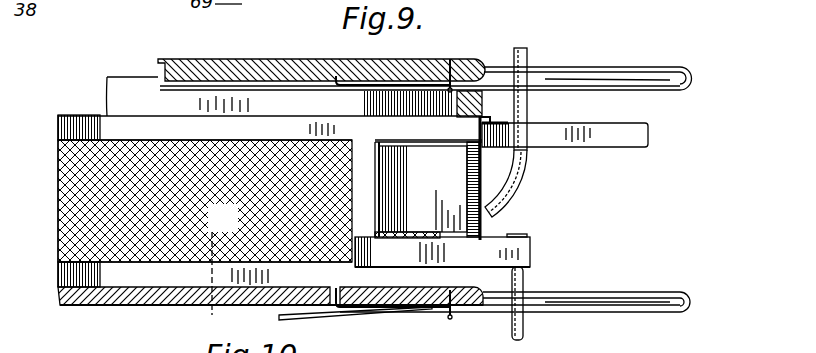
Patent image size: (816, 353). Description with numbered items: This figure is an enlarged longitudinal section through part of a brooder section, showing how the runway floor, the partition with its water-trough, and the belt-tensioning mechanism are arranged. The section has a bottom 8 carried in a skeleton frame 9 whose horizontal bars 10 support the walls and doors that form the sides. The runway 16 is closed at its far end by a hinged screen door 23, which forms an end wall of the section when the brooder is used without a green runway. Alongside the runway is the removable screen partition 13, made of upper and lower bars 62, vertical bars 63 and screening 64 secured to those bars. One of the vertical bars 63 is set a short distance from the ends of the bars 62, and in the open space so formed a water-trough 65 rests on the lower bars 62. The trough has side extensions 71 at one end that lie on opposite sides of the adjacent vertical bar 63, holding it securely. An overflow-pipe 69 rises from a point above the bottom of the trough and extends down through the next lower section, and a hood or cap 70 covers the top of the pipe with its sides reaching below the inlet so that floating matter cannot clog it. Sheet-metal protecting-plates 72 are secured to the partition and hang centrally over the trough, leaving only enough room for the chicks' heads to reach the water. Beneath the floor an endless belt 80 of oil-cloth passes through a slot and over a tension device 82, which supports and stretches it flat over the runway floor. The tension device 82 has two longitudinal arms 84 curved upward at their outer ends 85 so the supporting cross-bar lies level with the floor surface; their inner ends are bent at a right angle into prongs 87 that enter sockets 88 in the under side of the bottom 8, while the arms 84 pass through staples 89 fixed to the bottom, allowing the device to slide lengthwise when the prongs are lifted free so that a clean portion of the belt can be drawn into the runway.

The bottom 8 is at (428, 62).
The skeleton frame 9 is at (482, 104).
The horizontal bars 10 is at (407, 103).
The removable screen partition 13 is at (56, 210).
The runway 16 is at (102, 285).
The hinged screen door 23 is at (585, 137).
The upper and lower bars 62 is at (78, 114).
The vertical bars 63 is at (346, 118).
The screening 64 is at (143, 117).
The water-trough 65 is at (526, 249).
The overflow-pipe 69 is at (528, 162).
The hood or cap 70 is at (517, 234).
The side extensions 71 is at (362, 245).
The sheet-metal protecting-plates 72 is at (423, 189).
The endless belt 80 is at (168, 56).
The tension device 82 is at (549, 86).
The longitudinal arms 84 is at (613, 320).
The curved ends 85 is at (683, 89).
The prongs 87 is at (340, 75).
The sockets 88 is at (316, 63).
The staples 89 is at (452, 62).